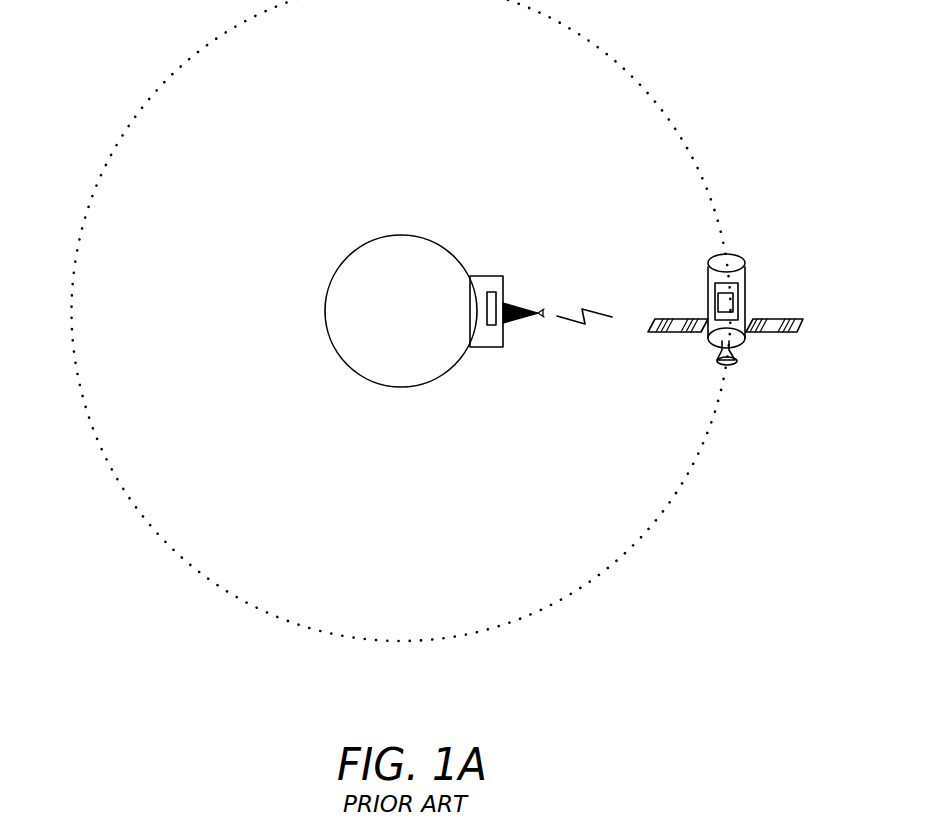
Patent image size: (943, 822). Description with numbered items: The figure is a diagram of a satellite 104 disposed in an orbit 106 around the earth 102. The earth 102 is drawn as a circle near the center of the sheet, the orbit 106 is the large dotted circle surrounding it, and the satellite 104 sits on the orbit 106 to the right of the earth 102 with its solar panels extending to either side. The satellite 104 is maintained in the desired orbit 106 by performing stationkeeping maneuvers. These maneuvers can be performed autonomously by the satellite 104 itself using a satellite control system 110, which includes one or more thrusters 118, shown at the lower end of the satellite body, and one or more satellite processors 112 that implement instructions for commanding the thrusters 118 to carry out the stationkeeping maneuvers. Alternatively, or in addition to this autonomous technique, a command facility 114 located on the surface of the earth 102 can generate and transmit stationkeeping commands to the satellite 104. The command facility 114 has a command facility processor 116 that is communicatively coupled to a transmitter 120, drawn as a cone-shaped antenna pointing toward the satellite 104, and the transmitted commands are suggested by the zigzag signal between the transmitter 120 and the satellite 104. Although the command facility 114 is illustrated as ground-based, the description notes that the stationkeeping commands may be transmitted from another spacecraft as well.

The earth 102 is at (425, 237).
The satellite 104 is at (698, 294).
The orbit 106 is at (632, 75).
The satellite control system 110 is at (715, 287).
The satellite processor 112 is at (718, 303).
The command facility 114 is at (488, 276).
The command facility processor 116 is at (502, 302).
The thruster 118 is at (720, 361).
The transmitter 120 is at (520, 322).